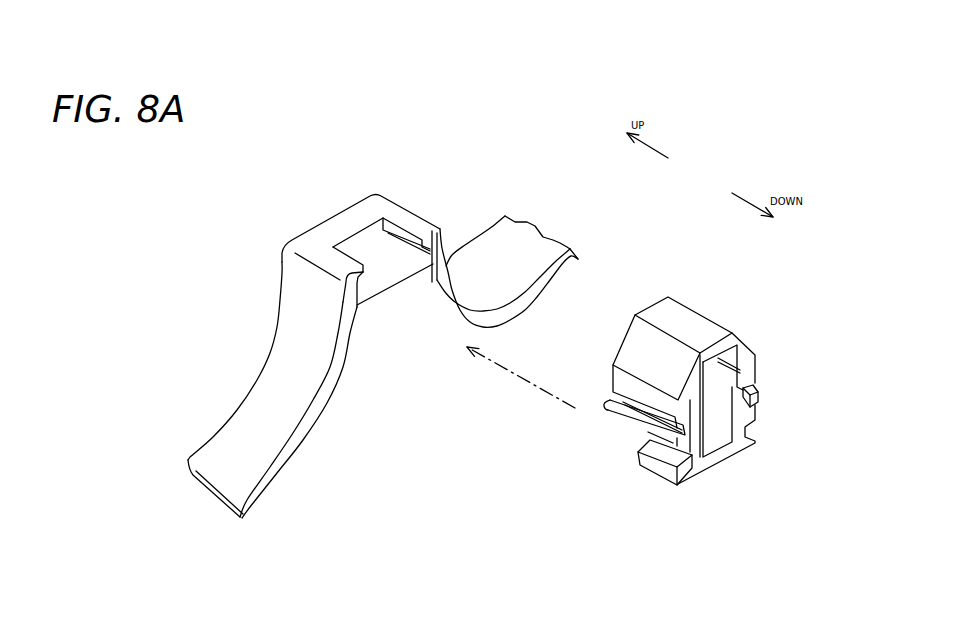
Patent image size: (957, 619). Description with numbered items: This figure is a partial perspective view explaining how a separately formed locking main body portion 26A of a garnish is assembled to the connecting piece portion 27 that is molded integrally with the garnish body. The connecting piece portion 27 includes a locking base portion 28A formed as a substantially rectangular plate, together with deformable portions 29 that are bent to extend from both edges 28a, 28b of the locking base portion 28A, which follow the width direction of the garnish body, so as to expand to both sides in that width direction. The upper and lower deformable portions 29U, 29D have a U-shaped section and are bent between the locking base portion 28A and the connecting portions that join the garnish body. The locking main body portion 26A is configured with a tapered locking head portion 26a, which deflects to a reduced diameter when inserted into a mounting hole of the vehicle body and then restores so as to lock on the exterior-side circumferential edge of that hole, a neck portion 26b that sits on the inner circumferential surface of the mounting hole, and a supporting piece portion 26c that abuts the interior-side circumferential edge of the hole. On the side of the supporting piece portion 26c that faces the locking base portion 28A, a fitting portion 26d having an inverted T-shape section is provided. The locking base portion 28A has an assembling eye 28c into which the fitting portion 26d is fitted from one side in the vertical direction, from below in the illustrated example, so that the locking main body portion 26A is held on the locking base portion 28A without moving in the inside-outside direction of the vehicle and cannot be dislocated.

The connecting piece portion 27 is at (210, 400).
The locking base portion 28A is at (330, 232).
The edge of the locking base portion 28a is at (323, 265).
The edge of the locking base portion 28b is at (413, 212).
The assembling eye 28c is at (383, 278).
The deformable portions 29 is at (385, 383).
The upper deformable portion 29U is at (505, 252).
The lower deformable portion 29D is at (245, 458).
The locking main body portion 26A is at (575, 468).
The locking head portion 26a is at (687, 320).
The neck portion 26b is at (755, 400).
The supporting piece portion 26c is at (758, 393).
The fitting portion 26d is at (662, 466).